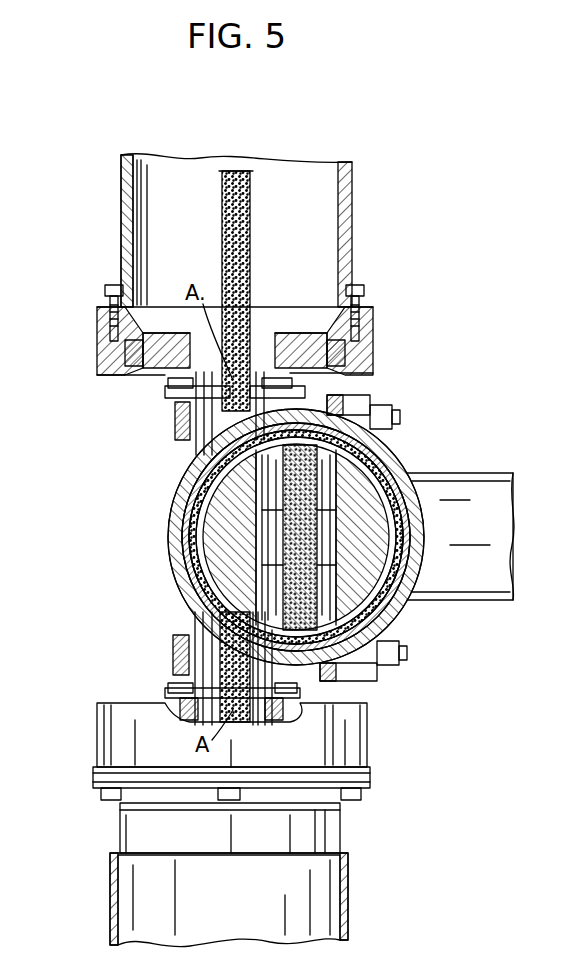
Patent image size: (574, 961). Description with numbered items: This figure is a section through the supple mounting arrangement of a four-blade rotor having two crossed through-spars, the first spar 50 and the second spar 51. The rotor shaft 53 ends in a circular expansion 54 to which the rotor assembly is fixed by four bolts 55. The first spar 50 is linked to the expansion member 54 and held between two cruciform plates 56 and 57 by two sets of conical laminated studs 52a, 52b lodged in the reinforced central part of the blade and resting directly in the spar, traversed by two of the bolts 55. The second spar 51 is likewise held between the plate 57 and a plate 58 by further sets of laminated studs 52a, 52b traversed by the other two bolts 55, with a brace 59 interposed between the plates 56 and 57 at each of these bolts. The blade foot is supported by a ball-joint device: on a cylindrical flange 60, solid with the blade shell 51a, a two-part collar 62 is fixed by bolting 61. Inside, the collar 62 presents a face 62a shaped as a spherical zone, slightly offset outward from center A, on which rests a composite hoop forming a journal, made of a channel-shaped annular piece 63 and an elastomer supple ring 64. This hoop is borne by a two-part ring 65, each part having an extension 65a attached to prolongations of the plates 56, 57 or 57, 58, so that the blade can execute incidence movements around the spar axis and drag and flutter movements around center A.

The first through-spar 50 is at (380, 468).
The second through-spar 51 is at (240, 200).
The blade shell 51a is at (121, 190).
The conical laminated stud 52a is at (210, 650).
The conical laminated stud 52b is at (266, 712).
The rotor shaft 53 is at (440, 478).
The circular expansion 54 is at (350, 398).
The through-bolt 55 is at (400, 417).
The cruciform plate 56 is at (350, 520).
The cruciform plate 57 is at (240, 500).
The plate 58 is at (180, 450).
The brace 59 is at (335, 690).
The cylindrical flange 60 is at (345, 253).
The bolting 61 is at (112, 285).
The collar 62 is at (350, 345).
The spherical zone face 62a is at (345, 333).
The annular piece 63 is at (335, 355).
The supple ring 64 is at (290, 345).
The ring 65 is at (178, 345).
The extension 65a is at (190, 397).